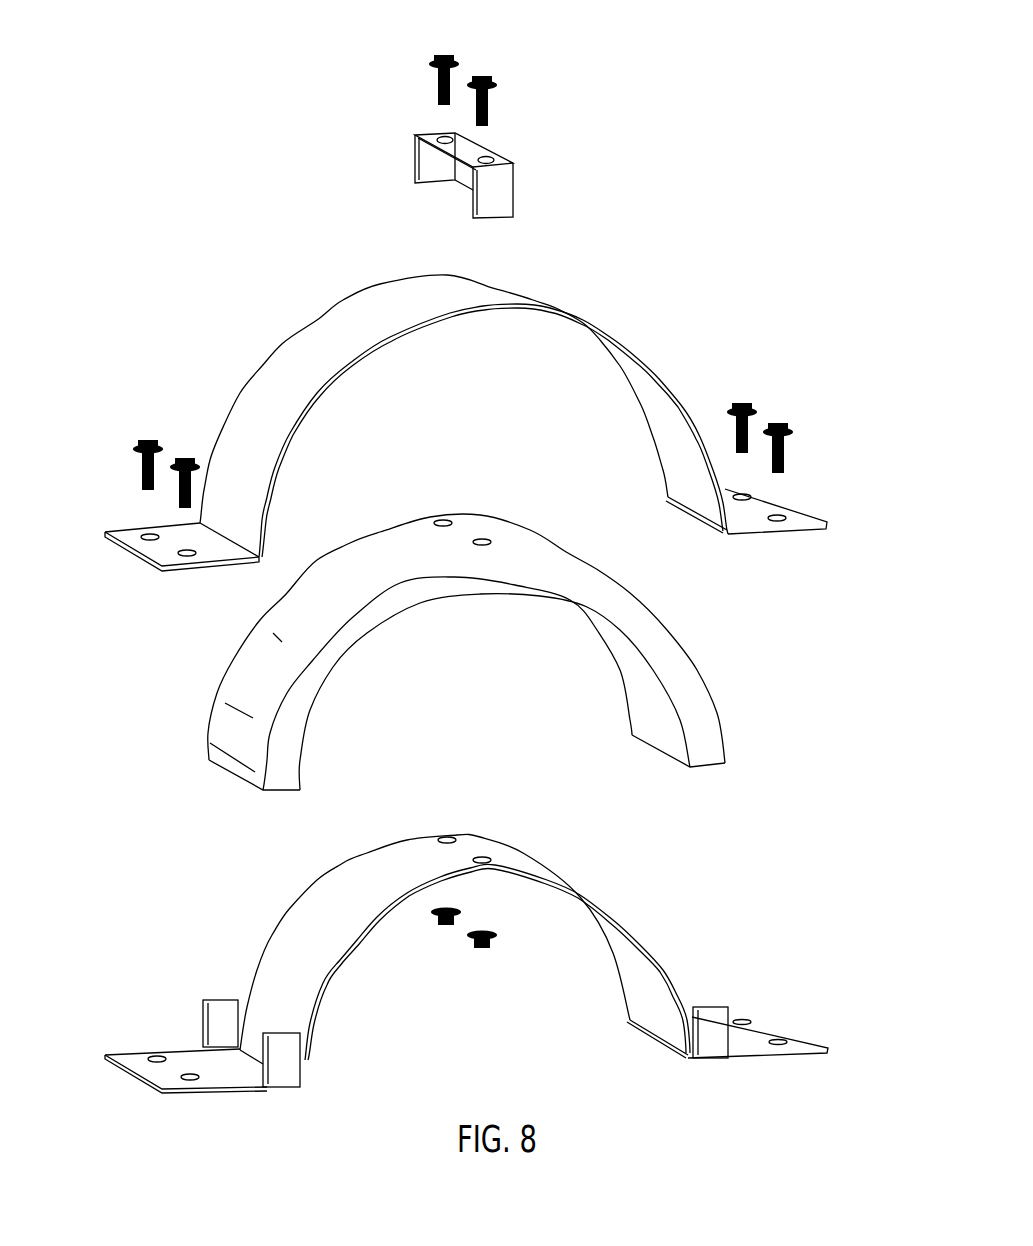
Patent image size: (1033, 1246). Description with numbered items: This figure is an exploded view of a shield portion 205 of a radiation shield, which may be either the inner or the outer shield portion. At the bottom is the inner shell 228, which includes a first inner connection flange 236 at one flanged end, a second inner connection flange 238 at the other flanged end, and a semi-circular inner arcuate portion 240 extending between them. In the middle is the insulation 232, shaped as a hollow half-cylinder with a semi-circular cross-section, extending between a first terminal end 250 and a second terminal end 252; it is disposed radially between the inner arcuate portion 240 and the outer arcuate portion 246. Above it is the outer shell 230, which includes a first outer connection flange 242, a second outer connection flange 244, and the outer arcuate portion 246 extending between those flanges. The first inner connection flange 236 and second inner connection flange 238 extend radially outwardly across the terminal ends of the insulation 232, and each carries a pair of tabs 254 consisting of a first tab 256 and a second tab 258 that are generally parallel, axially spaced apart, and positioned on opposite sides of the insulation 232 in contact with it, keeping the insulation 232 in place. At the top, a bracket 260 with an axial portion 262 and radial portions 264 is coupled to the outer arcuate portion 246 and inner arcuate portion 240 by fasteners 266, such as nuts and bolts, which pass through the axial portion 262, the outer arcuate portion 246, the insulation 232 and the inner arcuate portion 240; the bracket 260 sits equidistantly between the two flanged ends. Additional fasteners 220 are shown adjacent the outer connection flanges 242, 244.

The shield portion 205 is at (688, 187).
The fasteners 220 is at (185, 460).
The inner shell 228 is at (516, 824).
The outer shell 230 is at (313, 280).
The insulation 232 is at (590, 575).
The first inner connection flange 236 is at (158, 1072).
The second inner connection flange 238 is at (775, 1030).
The inner arcuate portion 240 is at (358, 938).
The first outer connection flange 242 is at (132, 548).
The second outer connection flange 244 is at (775, 495).
The outer arcuate portion 246 is at (574, 308).
The first terminal end 250 is at (222, 772).
The second terminal end 252 is at (700, 770).
The pair of tabs 254 is at (201, 966).
The first tab 256 is at (283, 1060).
The second tab 258 is at (218, 1022).
The bracket 260 is at (510, 134).
The axial portion 262 is at (460, 145).
The radial portions 264 is at (428, 165).
The fasteners 266 is at (447, 55).